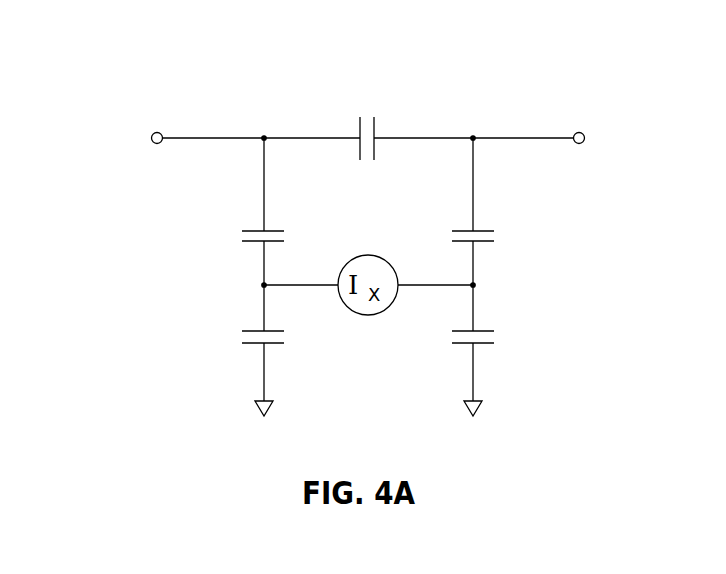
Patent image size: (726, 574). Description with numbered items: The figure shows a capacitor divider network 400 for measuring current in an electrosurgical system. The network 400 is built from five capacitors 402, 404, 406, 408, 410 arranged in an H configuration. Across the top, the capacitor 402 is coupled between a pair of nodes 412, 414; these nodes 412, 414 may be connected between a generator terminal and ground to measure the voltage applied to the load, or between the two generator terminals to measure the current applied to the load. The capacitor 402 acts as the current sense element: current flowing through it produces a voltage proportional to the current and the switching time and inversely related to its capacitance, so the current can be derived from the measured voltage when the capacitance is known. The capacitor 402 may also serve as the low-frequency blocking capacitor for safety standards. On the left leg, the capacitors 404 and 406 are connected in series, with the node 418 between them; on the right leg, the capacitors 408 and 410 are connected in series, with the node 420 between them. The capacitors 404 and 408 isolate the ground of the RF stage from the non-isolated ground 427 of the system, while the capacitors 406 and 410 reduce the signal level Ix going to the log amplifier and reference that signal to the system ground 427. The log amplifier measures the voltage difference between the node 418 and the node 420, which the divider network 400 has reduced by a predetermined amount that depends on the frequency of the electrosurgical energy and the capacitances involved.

The capacitor divider network 400 is at (580, 82).
The capacitor 402 is at (359, 117).
The capacitor 404 is at (240, 236).
The capacitor 406 is at (240, 337).
The capacitor 408 is at (498, 236).
The capacitor 410 is at (498, 338).
The node 412 is at (154, 132).
The node 414 is at (583, 132).
The node 418 is at (263, 285).
The node 420 is at (474, 285).
The non-isolated ground 427 is at (458, 410).